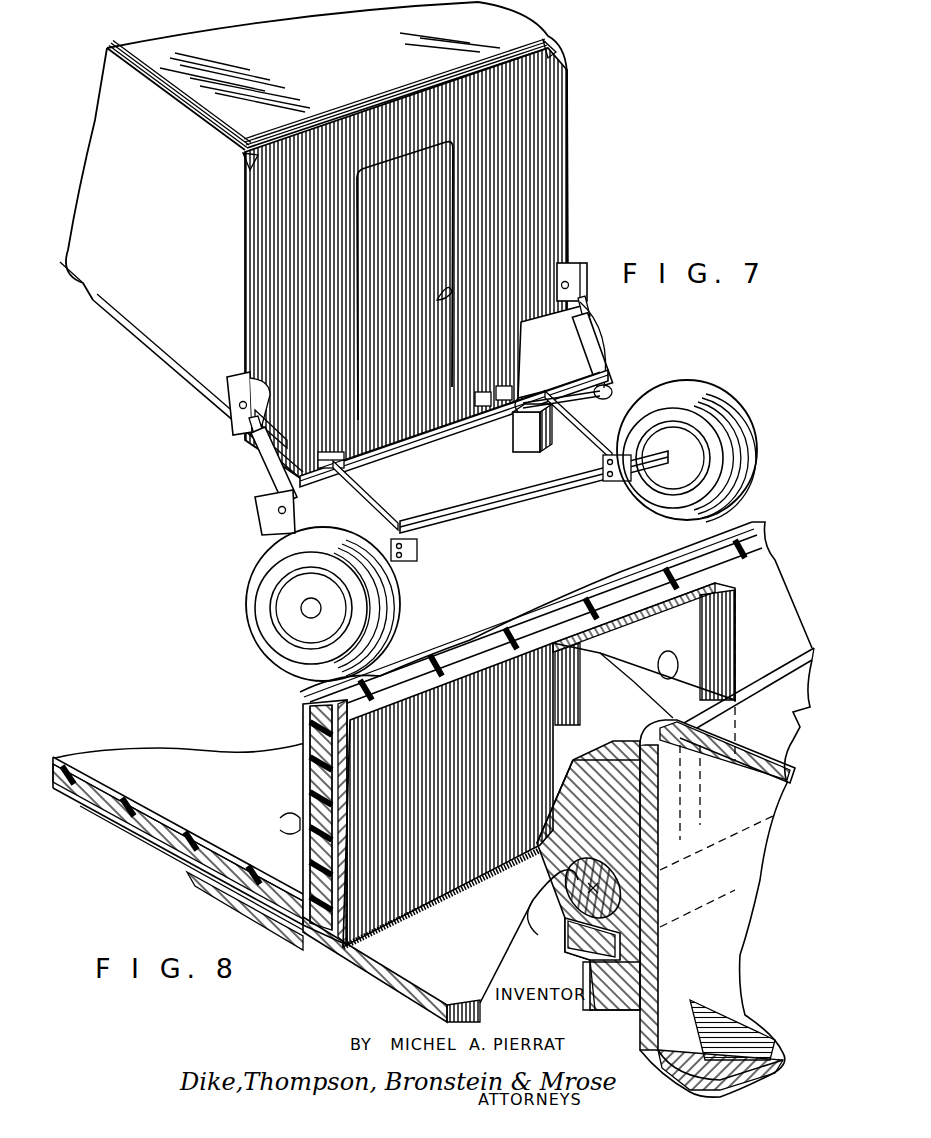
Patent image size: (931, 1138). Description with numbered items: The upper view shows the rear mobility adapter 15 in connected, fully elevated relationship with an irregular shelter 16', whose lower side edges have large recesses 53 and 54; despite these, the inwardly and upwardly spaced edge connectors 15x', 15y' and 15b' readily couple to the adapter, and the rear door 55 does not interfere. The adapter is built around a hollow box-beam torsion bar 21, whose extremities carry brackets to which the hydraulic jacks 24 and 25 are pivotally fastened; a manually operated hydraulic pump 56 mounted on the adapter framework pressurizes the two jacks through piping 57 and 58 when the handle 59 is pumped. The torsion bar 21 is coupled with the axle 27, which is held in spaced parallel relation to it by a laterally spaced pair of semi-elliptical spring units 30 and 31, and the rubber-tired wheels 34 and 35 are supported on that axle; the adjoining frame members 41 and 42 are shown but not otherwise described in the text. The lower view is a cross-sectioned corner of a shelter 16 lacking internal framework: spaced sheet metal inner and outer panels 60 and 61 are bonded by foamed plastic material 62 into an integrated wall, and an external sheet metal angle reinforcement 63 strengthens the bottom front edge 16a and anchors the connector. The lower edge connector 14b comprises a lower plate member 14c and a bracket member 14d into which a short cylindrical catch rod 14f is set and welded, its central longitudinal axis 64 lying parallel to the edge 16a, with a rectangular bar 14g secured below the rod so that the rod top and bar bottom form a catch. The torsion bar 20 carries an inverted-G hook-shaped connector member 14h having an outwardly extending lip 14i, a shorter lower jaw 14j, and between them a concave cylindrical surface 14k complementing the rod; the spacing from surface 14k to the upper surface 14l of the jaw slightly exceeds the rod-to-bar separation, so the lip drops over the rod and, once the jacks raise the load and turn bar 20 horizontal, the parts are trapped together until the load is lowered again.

In FIG. 7, the irregular shelter 16' is at (317, 240).
In FIG. 7, the door 55 is at (410, 284).
In FIG. 7, the recess 54 is at (530, 326).
In FIG. 7, the edge connector 15y' is at (589, 266).
In FIG. 7, the hydraulic jack 25 is at (611, 362).
In FIG. 7, the piping 58 is at (606, 330).
In FIG. 7, the edge connector 15x' is at (226, 380).
In FIG. 7, the recess 53 is at (226, 424).
In FIG. 7, the hydraulic jack 24 is at (268, 468).
In FIG. 7, the rear mobility adapter 15 is at (228, 492).
In FIG. 7, the torsion bar 21 is at (405, 460).
In FIG. 7, the bottom front edge 16a is at (343, 447).
In FIG. 8, the bottom front edge 16a is at (297, 882).
In FIG. 7, the edge connector 15b' is at (486, 383).
In FIG. 7, the piping 57 is at (470, 448).
In FIG. 7, the cross member 41 is at (370, 470).
In FIG. 7, the cross member 42 is at (590, 438).
In FIG. 7, the axle 27 is at (540, 507).
In FIG. 7, the semi-elliptical spring unit 30 is at (462, 532).
In FIG. 7, the semi-elliptical spring unit 31 is at (611, 485).
In FIG. 7, the hydraulic pump 56 is at (525, 450).
In FIG. 7, the handle 59 is at (554, 398).
In FIG. 7, the rubber-tired wheel 34 is at (272, 584).
In FIG. 7, the rubber-tired wheel 35 is at (706, 402).
In FIG. 7, the sheet metal angle reinforcement 63 is at (498, 636).
In FIG. 8, the sheet metal angle reinforcement 63 is at (150, 850).
In FIG. 7, the lower edge connector 14b is at (710, 648).
In FIG. 8, the shelter 16 is at (179, 804).
In FIG. 8, the foamed plastic material 62 is at (200, 826).
In FIG. 8, the inner panel 60 is at (148, 812).
In FIG. 8, the outer panel 61 is at (70, 796).
In FIG. 8, the lower plate member 14c is at (346, 988).
In FIG. 8, the bracket member 14d is at (607, 707).
In FIG. 8, the lip 14i is at (540, 846).
In FIG. 8, the hook-shaped connector member 14h is at (624, 807).
In FIG. 8, the concave cylindrical surface 14k is at (582, 835).
In FIG. 8, the catch rod 14f is at (580, 880).
In FIG. 8, the rectangular bar 14g is at (575, 945).
In FIG. 8, the upper surface of lower jaw 14l is at (598, 968).
In FIG. 8, the lower jaw 14j is at (628, 992).
In FIG. 8, the central longitudinal axis 64 is at (805, 778).
In FIG. 8, the torsion bar 20 is at (745, 805).